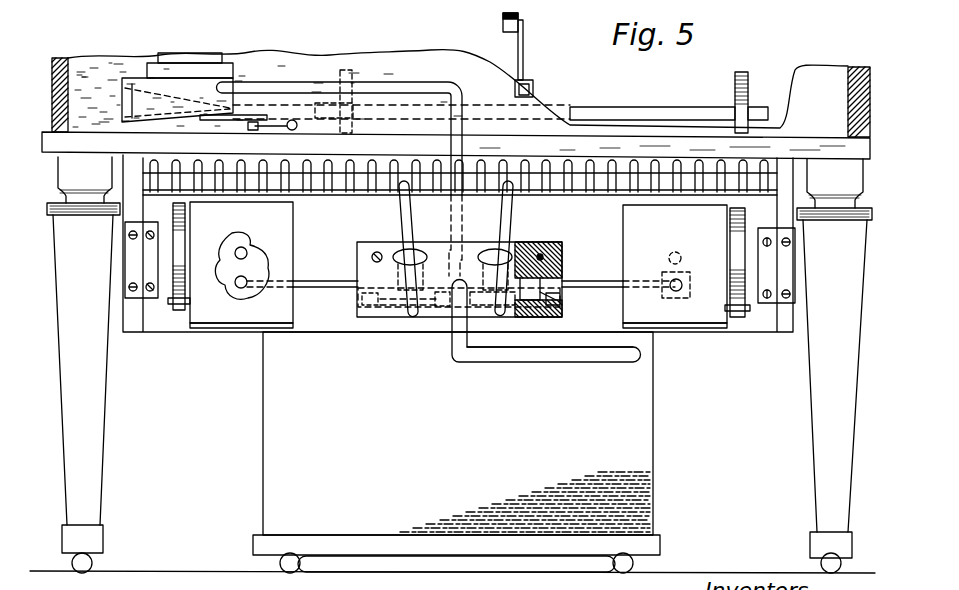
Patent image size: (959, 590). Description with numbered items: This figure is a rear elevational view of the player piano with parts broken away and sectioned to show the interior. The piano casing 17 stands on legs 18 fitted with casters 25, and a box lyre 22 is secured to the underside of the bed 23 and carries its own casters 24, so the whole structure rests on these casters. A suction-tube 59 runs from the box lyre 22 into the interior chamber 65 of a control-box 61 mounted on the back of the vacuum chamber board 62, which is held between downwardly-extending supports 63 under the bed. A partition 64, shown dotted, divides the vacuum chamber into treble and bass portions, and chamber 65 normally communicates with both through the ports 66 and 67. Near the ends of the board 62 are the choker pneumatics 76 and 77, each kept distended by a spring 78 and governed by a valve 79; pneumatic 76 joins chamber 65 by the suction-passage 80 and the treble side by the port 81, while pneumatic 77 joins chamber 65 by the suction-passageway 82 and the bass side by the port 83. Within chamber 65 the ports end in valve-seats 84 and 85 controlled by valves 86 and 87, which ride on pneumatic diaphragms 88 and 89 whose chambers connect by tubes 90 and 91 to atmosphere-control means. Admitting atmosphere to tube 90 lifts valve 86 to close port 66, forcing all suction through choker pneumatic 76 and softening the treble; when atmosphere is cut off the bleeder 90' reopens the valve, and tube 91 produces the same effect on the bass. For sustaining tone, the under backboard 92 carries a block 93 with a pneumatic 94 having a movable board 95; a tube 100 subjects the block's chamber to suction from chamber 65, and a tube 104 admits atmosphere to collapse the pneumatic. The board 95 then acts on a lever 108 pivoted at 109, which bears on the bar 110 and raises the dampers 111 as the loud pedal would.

The piano casing 17 is at (60, 62).
The legs 18 is at (93, 475).
The box lyre 22 is at (268, 430).
The bed 23 is at (50, 150).
The casters 24 is at (283, 563).
The casters 25 is at (93, 563).
The suction-tube 59 is at (497, 361).
The control-box 61 is at (473, 248).
The vacuum chamber board 62 is at (168, 327).
The supports 63 is at (133, 327).
The partition 64 is at (461, 211).
The interior chamber 65 is at (550, 243).
The port 66 is at (418, 253).
The port 67 is at (517, 252).
The choker pneumatic 76 is at (231, 320).
The choker pneumatic 77 is at (692, 320).
The spring 78 is at (183, 233).
The valve 79 is at (688, 280).
The suction-passage 80 is at (316, 280).
The port 81 is at (247, 252).
The suction-passageway 82 is at (588, 279).
The port 83 is at (679, 255).
The valve-seat 84 is at (438, 320).
The valve-seat 85 is at (521, 318).
The valve 86 is at (390, 320).
The valve 87 is at (545, 318).
The pneumatic diaphragm 88 is at (371, 320).
The pneumatic diaphragm 89 is at (565, 318).
The tube 90 is at (387, 221).
The bleeder 90' is at (462, 327).
The tube 91 is at (498, 322).
The under backboard 92 is at (375, 65).
The block 93 is at (217, 72).
The pneumatic 94 is at (155, 97).
The movable board 95 is at (132, 117).
The tube 100 is at (450, 93).
The tube 104 is at (226, 147).
The lever 108 is at (296, 120).
The pivot 109 is at (300, 120).
The bar 110 is at (605, 118).
The dampers 111 is at (522, 18).